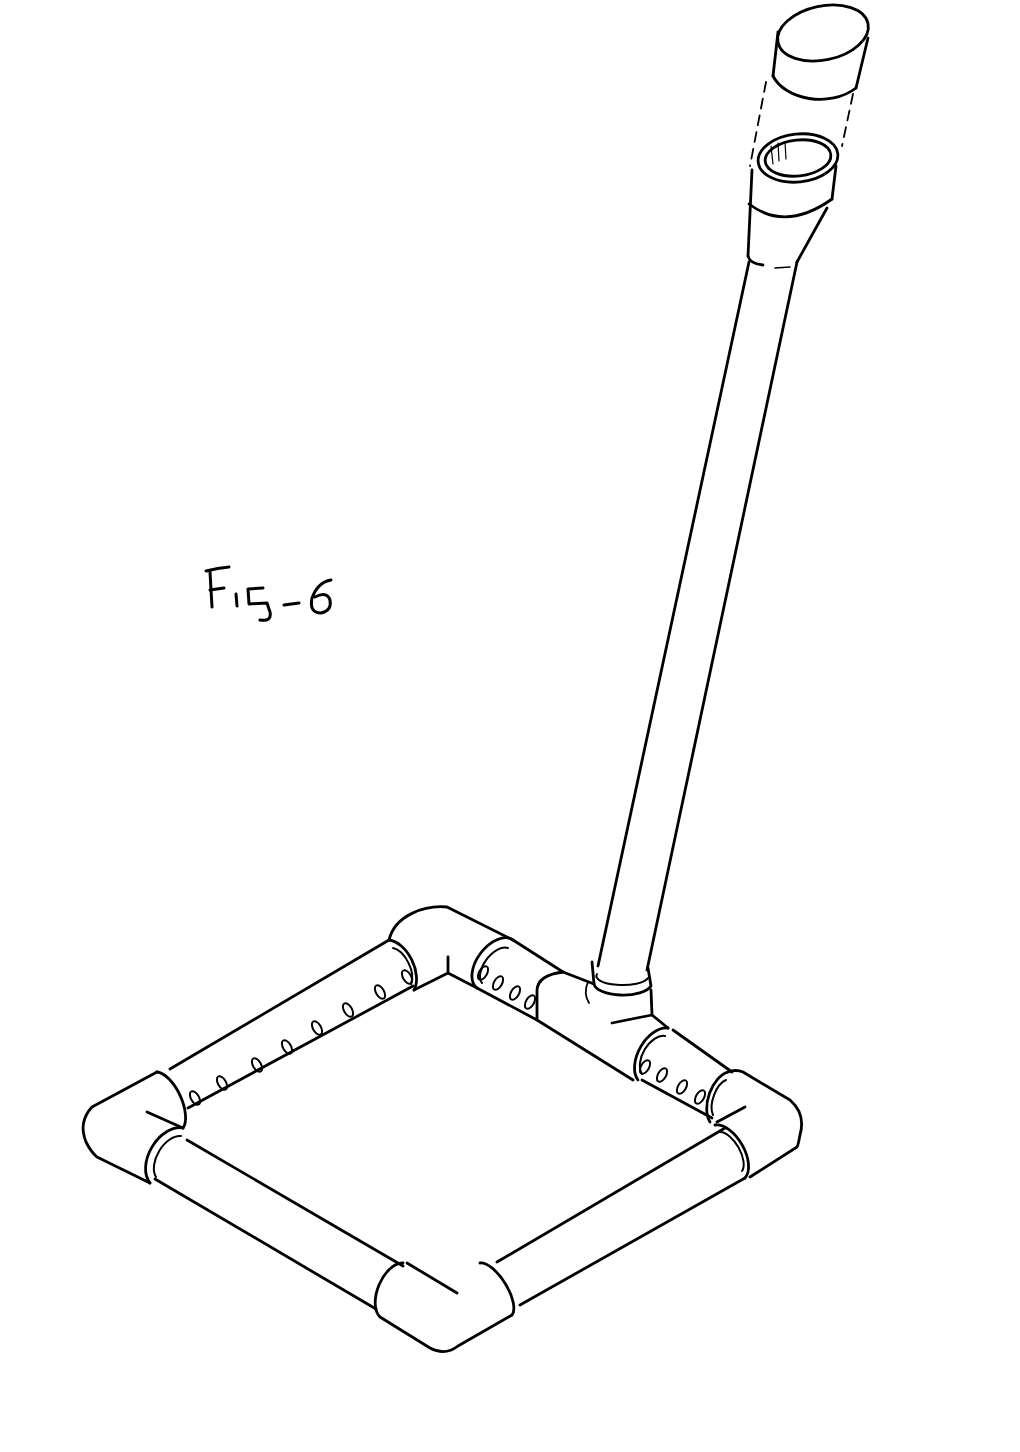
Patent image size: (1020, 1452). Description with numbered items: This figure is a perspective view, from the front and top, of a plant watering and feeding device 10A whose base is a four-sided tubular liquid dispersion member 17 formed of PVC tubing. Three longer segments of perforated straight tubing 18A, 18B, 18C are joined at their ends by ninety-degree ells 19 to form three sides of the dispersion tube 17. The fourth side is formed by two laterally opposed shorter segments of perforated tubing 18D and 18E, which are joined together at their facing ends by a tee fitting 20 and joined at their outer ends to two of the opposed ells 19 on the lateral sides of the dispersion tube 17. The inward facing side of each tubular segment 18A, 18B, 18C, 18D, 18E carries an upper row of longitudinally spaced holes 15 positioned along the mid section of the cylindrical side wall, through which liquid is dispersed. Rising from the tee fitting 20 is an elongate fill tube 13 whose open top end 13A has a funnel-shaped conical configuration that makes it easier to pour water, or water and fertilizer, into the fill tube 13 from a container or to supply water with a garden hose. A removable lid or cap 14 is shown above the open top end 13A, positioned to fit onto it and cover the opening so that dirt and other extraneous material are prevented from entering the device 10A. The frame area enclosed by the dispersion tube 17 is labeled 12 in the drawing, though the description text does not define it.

The plant watering and feeding device 10A is at (500, 585).
The base frame 12 is at (452, 1149).
The fill tube 13 is at (722, 690).
The open top end 13A is at (815, 161).
The cap 14 is at (783, 62).
The holes 15 is at (260, 1067).
The liquid dispersion member 17 is at (248, 1006).
The perforated straight tubing segment 18A is at (265, 1227).
The perforated straight tubing segment 18B is at (342, 970).
The perforated straight tubing segment 18C is at (617, 1232).
The shorter perforated tubing segment 18D is at (533, 960).
The shorter perforated tubing segment 18E is at (697, 1058).
The ells 19 is at (427, 908).
The tee fitting 20 is at (652, 993).